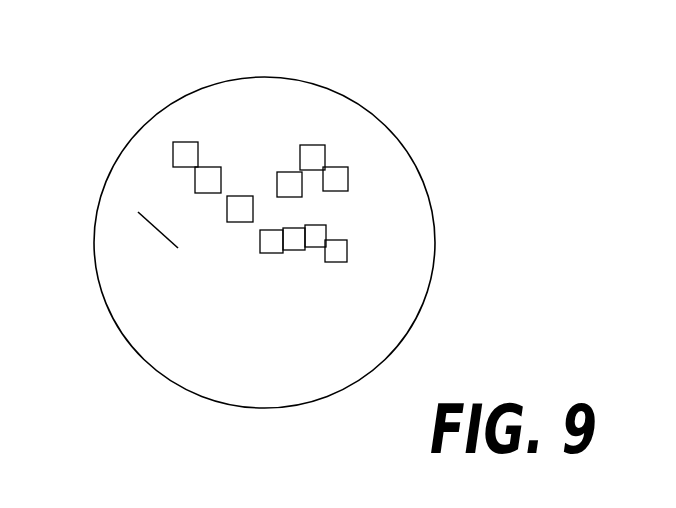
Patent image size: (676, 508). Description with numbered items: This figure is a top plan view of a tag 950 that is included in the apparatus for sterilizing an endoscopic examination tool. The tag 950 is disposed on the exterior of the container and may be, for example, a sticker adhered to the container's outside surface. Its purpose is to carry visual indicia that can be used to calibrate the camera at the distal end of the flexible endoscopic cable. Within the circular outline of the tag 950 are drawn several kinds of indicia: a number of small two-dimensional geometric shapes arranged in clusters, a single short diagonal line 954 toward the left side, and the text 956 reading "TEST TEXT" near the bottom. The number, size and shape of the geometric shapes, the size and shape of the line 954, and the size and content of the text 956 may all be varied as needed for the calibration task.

The tag 950 is at (425, 182).
The line 954 is at (158, 232).
The text 956 is at (222, 324).